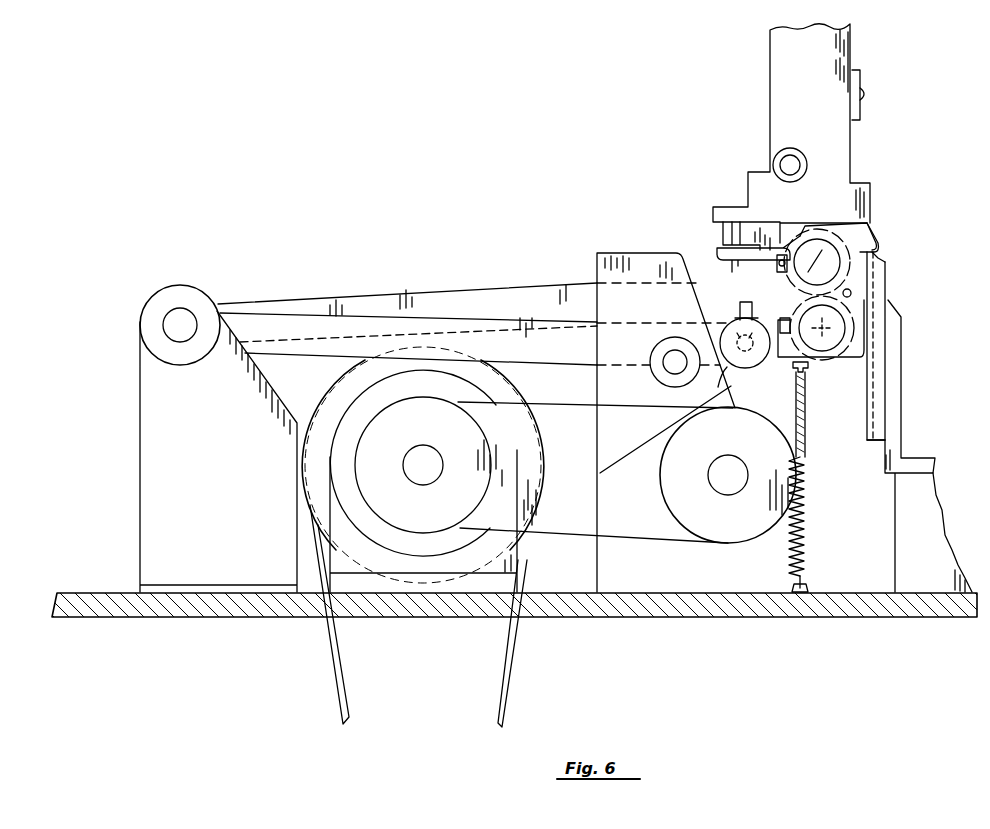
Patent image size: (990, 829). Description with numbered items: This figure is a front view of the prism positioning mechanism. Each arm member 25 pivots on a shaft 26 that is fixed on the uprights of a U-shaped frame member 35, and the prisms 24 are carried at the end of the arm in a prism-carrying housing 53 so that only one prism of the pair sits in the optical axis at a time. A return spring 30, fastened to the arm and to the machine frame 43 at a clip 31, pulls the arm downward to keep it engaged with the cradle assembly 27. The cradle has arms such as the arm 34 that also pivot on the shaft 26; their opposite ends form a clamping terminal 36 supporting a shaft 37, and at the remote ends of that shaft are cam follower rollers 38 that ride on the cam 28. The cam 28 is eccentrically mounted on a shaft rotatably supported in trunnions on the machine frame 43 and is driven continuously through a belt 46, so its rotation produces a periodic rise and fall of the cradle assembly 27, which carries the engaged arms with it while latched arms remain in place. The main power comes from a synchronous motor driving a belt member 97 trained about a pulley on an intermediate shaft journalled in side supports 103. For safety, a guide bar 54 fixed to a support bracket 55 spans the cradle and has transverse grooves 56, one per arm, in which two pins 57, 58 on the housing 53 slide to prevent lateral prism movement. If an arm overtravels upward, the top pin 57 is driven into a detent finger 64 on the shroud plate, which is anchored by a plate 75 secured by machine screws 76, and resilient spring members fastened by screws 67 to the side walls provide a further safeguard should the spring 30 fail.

The prisms 24 is at (813, 265).
The arm member 25 is at (495, 305).
The shaft 26 is at (172, 322).
The cradle assembly 27 is at (572, 366).
The cam 28 is at (793, 407).
The return spring 30 is at (803, 508).
The clip 31 is at (805, 588).
The arm 34 is at (380, 325).
The U-shaped frame member 35 is at (138, 415).
The clamping terminal 36 is at (740, 306).
The shaft 37 is at (743, 354).
The cam follower rollers 38 is at (709, 381).
The machine frame 43 is at (615, 600).
The belt 46 is at (592, 410).
The prism-carrying housing 53 is at (852, 296).
The guide bar 54 is at (880, 290).
The support bracket 55 is at (898, 395).
The transverse grooves 56 is at (872, 424).
The pin 57 is at (879, 256).
The pin 58 is at (866, 345).
The detent fingers 64 is at (876, 245).
The screws 67 is at (818, 265).
The plate 75 is at (858, 110).
The machine screws 76 is at (866, 92).
The belt member 97 is at (510, 678).
The side supports 103 is at (420, 560).